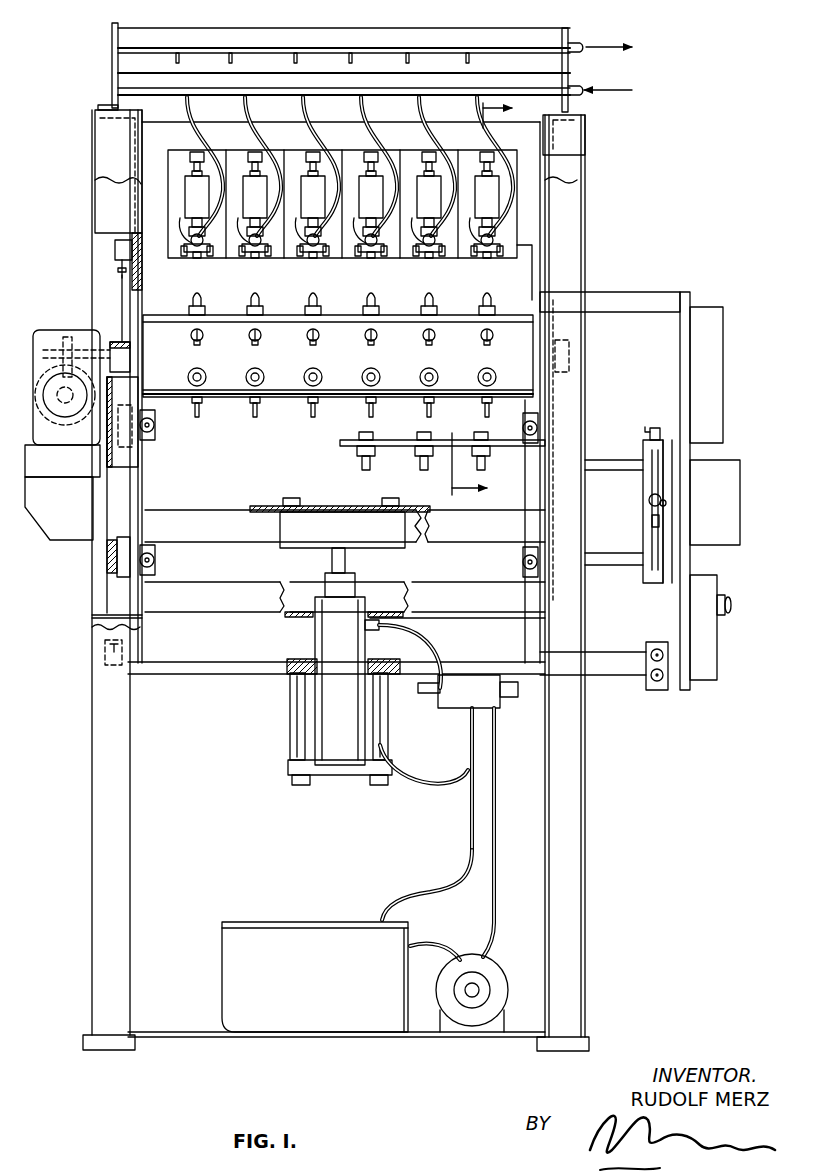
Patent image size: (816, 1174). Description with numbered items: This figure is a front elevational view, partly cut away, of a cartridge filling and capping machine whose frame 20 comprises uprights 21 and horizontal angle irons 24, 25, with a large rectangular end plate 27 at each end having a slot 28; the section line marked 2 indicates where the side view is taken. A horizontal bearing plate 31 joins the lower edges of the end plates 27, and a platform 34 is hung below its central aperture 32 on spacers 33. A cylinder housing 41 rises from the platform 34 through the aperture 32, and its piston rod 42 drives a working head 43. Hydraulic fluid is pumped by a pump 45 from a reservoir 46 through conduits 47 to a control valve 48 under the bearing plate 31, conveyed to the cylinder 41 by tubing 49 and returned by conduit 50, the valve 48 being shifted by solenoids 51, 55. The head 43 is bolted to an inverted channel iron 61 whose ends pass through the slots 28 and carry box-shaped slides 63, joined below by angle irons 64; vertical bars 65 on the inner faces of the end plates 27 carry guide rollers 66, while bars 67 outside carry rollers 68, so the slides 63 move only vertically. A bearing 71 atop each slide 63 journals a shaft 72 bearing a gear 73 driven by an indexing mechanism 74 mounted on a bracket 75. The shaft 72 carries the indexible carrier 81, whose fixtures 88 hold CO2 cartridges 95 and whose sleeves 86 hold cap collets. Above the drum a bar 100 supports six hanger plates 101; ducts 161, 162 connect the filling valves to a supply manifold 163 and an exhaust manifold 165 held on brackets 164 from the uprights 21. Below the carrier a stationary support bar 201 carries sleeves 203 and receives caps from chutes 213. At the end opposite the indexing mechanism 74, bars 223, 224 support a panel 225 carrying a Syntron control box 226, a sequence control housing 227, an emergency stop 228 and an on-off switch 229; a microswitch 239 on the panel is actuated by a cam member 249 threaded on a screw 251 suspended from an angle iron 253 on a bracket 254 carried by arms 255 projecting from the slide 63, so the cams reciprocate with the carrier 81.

The frame 20 is at (86, 721).
The legs or uprights 21 is at (92, 832).
The angle iron 24 is at (105, 668).
The angle iron 25 is at (101, 123).
The end plate 27 is at (135, 178).
The slot 28 is at (130, 300).
The bearing plate 31 is at (204, 668).
The aperture 32 is at (284, 676).
The spacers 33 is at (292, 722).
The platform 34 is at (340, 786).
The cylinder jacket or housing 41 is at (325, 735).
The piston rod 42 is at (348, 569).
The working head or block 43 is at (282, 542).
The pump 45 is at (499, 976).
The reservoir or sump 46 is at (288, 926).
The conduits 47 is at (497, 890).
The control valve 48 is at (468, 675).
The tubing 49 is at (416, 646).
The conduit 50 is at (446, 890).
The solenoid 51 is at (418, 688).
The solenoid 55 is at (518, 697).
The inverted channel iron 61 is at (272, 506).
The box-shaped slide 63 is at (108, 460).
The angle irons 64 is at (400, 592).
The bars 65 is at (145, 500).
The guide rollers 66 is at (156, 427).
The bars 67 is at (120, 575).
The rollers 68 is at (132, 440).
The bored bearing 71 is at (112, 341).
The shaft 72 is at (95, 345).
The gear 73 is at (60, 360).
The indexing mechanism 74 is at (30, 360).
The bracket 75 is at (93, 522).
The indexible drum or carrier 81 is at (172, 316).
The sleeve 86 is at (360, 332).
The fixture 88 is at (364, 304).
The CO2 cartridges 95 is at (246, 300).
The bar 100 is at (522, 257).
The hanger plates 101 is at (218, 256).
The duct 161 is at (240, 110).
The duct 162 is at (470, 60).
The supply manifold 163 is at (270, 78).
The brackets 164 is at (112, 62).
The exhaust manifold 165 is at (462, 38).
The support bar 201 is at (394, 441).
The sleeve 203 is at (422, 468).
The chute 213 is at (360, 434).
The bar 223 is at (618, 669).
The bar 224 is at (630, 295).
The panel 225 is at (690, 292).
The Syntron control box 226 is at (725, 322).
The housing for sequence control mechanism 227 is at (740, 458).
The emergency electrical stop 228 is at (728, 614).
The on and off switch 229 is at (660, 691).
The microswitch 239 is at (665, 560).
The cam member 249 is at (648, 498).
The screw 251 is at (645, 475).
The angle iron 253 is at (655, 430).
The bracket 254 is at (645, 516).
The arms 255 is at (590, 468).
The section line 2- 2 is at (490, 300).